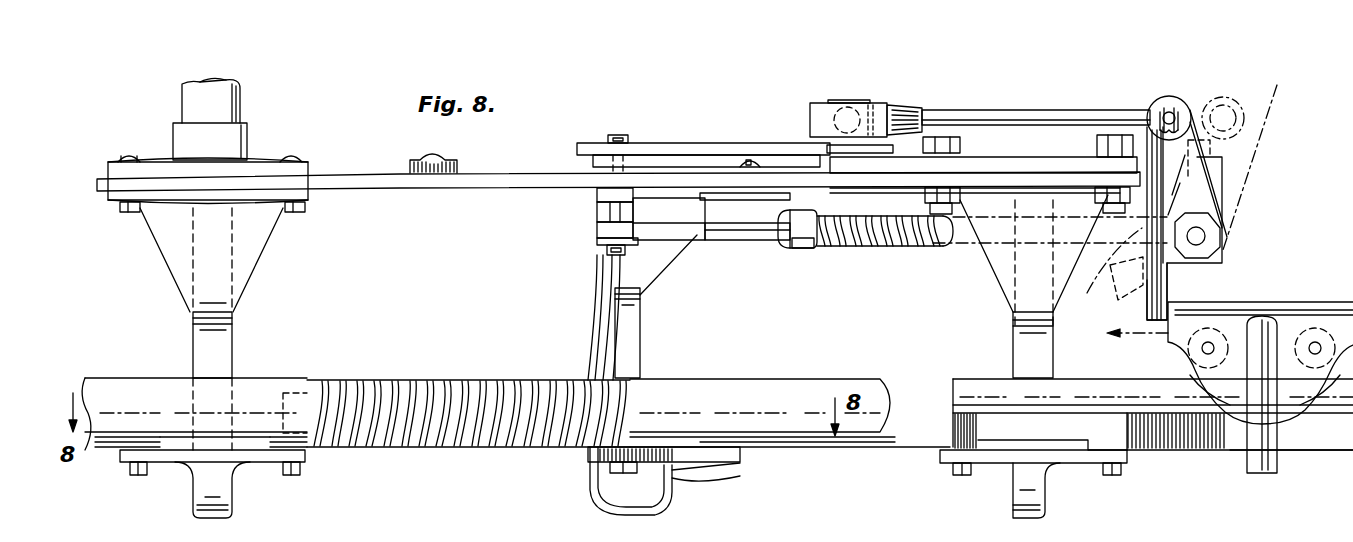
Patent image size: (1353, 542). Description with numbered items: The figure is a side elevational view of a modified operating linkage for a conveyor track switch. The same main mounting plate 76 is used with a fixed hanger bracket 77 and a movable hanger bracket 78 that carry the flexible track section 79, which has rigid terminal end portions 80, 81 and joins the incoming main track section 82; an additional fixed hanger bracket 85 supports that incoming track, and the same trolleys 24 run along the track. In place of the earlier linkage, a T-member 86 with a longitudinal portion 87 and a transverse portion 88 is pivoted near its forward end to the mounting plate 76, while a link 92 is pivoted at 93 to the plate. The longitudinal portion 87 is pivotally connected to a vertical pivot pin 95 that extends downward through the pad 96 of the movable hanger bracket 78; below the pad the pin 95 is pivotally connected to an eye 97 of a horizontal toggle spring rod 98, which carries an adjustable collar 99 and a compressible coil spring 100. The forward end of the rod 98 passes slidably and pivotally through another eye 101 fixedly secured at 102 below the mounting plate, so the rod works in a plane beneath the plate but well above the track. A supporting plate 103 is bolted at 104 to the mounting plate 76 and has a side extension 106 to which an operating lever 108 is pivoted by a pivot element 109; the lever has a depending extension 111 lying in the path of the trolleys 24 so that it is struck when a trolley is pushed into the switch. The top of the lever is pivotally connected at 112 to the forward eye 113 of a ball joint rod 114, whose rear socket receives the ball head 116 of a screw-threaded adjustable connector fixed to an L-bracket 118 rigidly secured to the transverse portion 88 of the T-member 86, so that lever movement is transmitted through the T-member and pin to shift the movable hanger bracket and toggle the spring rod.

The trolleys 24 is at (1305, 310).
The main mounting plate 76 is at (352, 185).
The fixed hanger bracket 77 is at (222, 331).
The movable hanger bracket 78 is at (625, 332).
The flexible track section 79 is at (484, 372).
The rigid terminal end portion 80 is at (265, 385).
The rigid terminal end portion 81 is at (720, 378).
The main track section 82 is at (1325, 452).
The fixed hanger bracket 85 is at (1040, 490).
The T-member 86 is at (740, 135).
The longitudinal portion 87 is at (690, 142).
The transverse portion 88 is at (867, 152).
The link 92 is at (523, 170).
The pivot 93 is at (440, 158).
The vertical pivot pin 95 is at (618, 135).
The pad 96 is at (722, 198).
The eye 97 is at (593, 232).
The toggle spring rod 98 is at (757, 242).
The adjustable collar 99 is at (803, 250).
The compressible coil spring 100 is at (888, 245).
The eye 101 is at (1228, 206).
The securing point 102 is at (1210, 145).
The supporting plate 103 is at (1030, 155).
The bolts 104 is at (940, 138).
The side extension 106 is at (1215, 188).
The operating lever 108 is at (1051, 286).
The pivot element 109 is at (1200, 240).
The depending extension 111 is at (1165, 283).
The pivotal connection 112 is at (1180, 108).
The eye 113 is at (1248, 118).
The ball joint rod 114 is at (1018, 126).
The ball head 116 is at (873, 103).
The L-bracket 118 is at (838, 102).